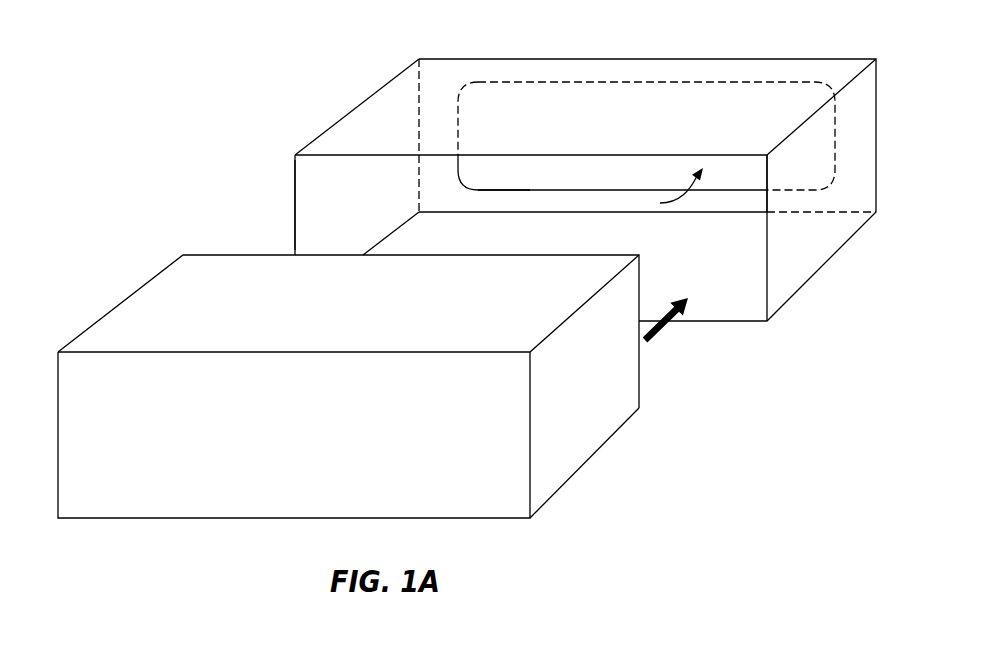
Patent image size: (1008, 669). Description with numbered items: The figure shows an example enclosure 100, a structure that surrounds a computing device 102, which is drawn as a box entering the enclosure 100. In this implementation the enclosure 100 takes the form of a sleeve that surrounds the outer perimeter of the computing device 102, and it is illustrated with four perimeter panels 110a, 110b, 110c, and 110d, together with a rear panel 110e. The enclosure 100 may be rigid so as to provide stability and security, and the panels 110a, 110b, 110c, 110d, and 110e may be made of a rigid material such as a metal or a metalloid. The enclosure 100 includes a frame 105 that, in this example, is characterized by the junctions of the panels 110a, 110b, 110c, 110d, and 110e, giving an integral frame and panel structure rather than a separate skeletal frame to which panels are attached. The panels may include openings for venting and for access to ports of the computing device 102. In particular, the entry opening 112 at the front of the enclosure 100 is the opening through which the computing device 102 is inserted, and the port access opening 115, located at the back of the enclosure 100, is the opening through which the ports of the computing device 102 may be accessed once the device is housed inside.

The enclosure 100 is at (354, 64).
The computing device 102 is at (630, 408).
The frame 105 is at (345, 113).
The panel 110a is at (380, 209).
The panel 110b is at (565, 129).
The panel 110c is at (543, 239).
The panel 110d is at (813, 207).
The panel 110e is at (512, 198).
The entry opening 112 is at (289, 176).
The port access opening 115 is at (664, 191).